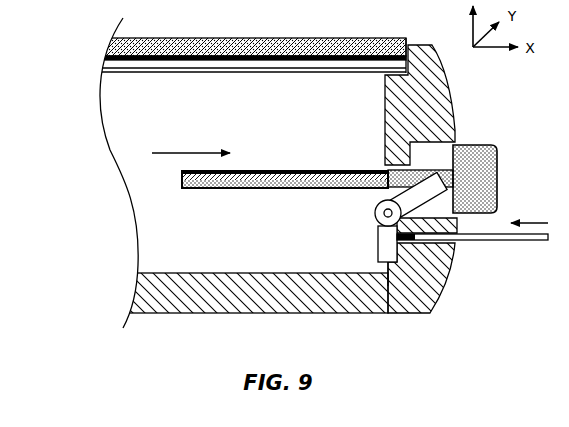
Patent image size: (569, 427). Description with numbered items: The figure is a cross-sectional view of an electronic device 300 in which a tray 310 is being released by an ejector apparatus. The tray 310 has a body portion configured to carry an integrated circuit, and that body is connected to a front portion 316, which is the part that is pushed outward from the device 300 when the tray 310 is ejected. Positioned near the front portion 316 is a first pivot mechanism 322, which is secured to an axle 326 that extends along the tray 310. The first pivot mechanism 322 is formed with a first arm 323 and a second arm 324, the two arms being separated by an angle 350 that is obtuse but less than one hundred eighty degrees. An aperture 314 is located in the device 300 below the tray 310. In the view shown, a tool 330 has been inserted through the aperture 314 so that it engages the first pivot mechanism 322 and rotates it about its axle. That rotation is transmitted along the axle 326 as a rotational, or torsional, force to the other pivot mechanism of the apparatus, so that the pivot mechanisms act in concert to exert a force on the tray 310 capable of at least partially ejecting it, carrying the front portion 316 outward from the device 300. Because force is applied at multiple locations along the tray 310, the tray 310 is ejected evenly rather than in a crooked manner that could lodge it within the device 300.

The electronic device 300 is at (88, 89).
The tray 310 is at (248, 190).
The aperture 314 is at (463, 256).
The front portion 316 is at (480, 145).
The first pivot mechanism 322 is at (355, 208).
The first arm 323 is at (392, 168).
The second arm 324 is at (388, 286).
The axle 326 is at (375, 220).
The tool 330 is at (508, 243).
The angle 350 is at (430, 313).